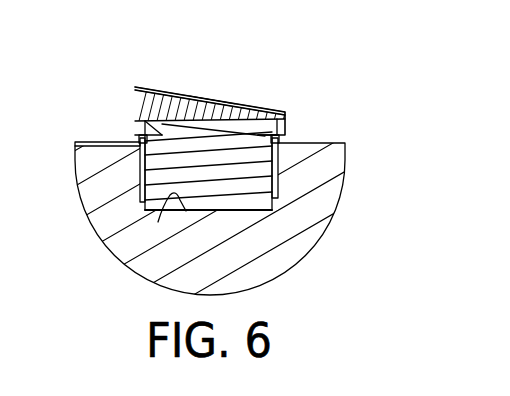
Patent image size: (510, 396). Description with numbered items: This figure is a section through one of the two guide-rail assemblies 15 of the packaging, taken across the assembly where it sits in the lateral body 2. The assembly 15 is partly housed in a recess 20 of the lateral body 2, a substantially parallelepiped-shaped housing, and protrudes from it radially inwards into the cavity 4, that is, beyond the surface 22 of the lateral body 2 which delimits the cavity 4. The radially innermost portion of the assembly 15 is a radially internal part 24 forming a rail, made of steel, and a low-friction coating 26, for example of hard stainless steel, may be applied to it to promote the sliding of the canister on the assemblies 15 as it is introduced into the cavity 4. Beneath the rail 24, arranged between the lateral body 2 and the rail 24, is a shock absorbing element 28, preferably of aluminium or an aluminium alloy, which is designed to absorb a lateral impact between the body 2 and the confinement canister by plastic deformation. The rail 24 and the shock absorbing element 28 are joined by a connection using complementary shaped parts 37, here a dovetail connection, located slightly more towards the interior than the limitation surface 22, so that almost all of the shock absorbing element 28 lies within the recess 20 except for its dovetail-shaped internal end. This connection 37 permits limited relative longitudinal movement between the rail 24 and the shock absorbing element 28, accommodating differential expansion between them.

The lateral body 2 is at (307, 224).
The cavity 4 is at (194, 74).
The assembly 15 is at (211, 90).
The recess 20 is at (158, 222).
The surface 22 is at (110, 141).
The radially internal part 24 is at (233, 102).
The low-friction coating 26 is at (184, 94).
The shock absorbing element 28 is at (257, 170).
The connection using complementary shaped parts 37 is at (268, 112).